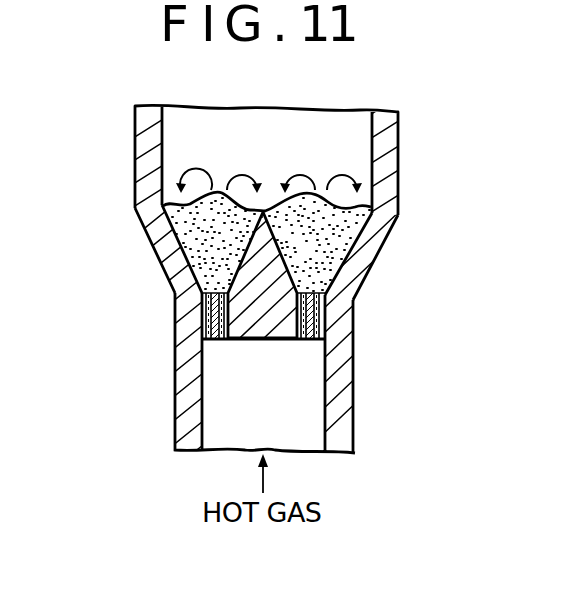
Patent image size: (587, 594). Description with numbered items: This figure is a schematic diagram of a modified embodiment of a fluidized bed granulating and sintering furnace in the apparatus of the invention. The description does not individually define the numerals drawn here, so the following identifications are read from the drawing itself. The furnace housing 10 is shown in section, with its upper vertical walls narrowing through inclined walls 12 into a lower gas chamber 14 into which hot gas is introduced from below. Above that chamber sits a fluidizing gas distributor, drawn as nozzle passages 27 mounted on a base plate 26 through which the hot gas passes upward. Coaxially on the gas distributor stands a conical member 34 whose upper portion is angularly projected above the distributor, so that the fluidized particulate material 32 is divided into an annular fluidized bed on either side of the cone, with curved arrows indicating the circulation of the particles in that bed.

The vessel / upper housing wall 10 is at (398, 172).
The inclined transition wall 12 is at (372, 266).
The lower gas chamber wall 14 is at (353, 397).
The gas distributor plate / nozzle base 26 is at (200, 323).
The gas nozzle tubes 27 is at (200, 303).
The particulate material beds 32 is at (190, 223).
The hatched partition / separator 34 is at (250, 253).